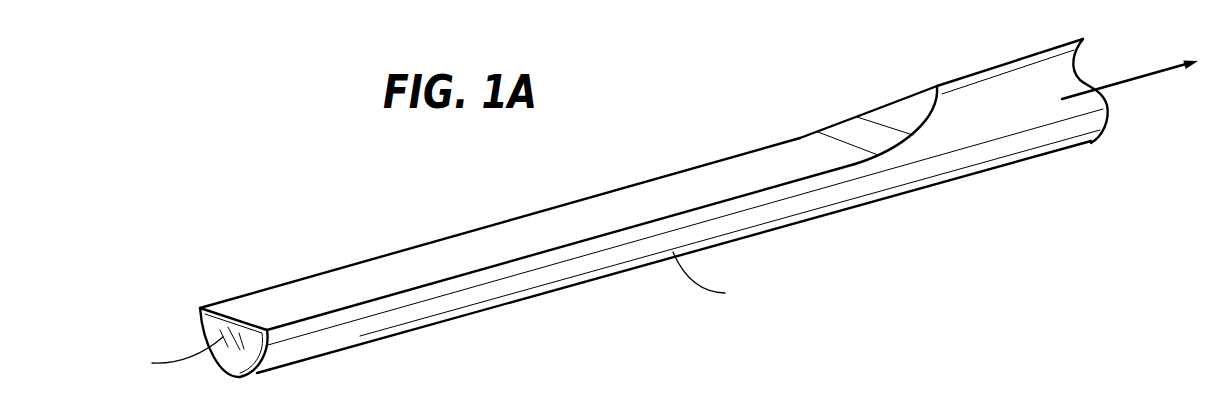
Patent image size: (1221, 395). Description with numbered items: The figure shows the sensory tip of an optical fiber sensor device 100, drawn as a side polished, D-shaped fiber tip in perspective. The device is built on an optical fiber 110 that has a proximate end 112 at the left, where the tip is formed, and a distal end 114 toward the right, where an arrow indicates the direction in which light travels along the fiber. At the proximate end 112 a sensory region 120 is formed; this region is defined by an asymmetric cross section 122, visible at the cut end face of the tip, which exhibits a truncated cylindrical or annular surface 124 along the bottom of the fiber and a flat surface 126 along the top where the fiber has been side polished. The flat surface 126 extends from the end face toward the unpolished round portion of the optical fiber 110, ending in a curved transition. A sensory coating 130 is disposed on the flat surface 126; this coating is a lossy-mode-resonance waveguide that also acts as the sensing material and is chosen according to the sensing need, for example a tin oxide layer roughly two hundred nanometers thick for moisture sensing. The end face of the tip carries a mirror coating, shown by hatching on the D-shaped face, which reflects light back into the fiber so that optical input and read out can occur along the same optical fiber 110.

The optical fiber sensor device 100 is at (996, 200).
The optical fiber 110 is at (992, 65).
The proximate end 112 is at (166, 145).
The distal end 114 is at (1130, 78).
The sensory region 120 is at (707, 178).
The asymmetric cross section 122 is at (175, 305).
The truncated cylindrical or annular surface 124 is at (305, 360).
The flat surface 126 is at (257, 290).
The sensory coating 130 is at (392, 232).